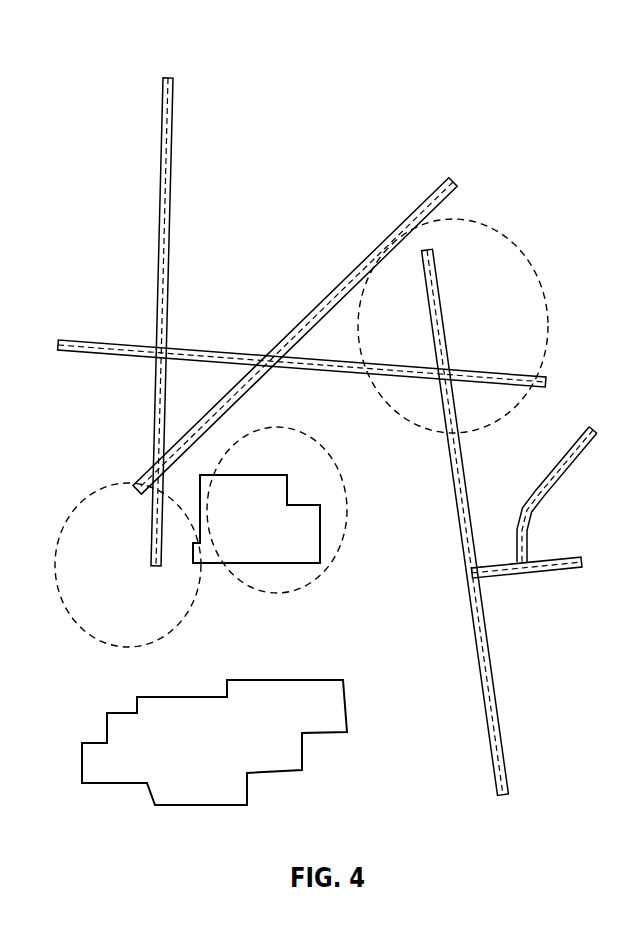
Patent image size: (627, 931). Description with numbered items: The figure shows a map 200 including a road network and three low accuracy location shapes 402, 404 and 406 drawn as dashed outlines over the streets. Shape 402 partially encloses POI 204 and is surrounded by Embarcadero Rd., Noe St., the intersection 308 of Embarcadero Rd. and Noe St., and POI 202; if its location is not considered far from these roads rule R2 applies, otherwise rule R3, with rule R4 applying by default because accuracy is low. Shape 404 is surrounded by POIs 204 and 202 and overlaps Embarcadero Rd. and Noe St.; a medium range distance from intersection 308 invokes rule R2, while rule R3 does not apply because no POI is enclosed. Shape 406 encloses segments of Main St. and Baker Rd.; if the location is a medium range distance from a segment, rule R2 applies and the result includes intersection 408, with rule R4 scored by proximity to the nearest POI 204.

The map 200 is at (136, 57).
The POI 202 is at (285, 680).
The POI 204 is at (250, 475).
The intersection 308 is at (150, 454).
The low accuracy location shape 402 is at (263, 593).
The low accuracy location shape 404 is at (123, 648).
The low accuracy location shape 406 is at (478, 217).
The intersection 408 is at (453, 364).